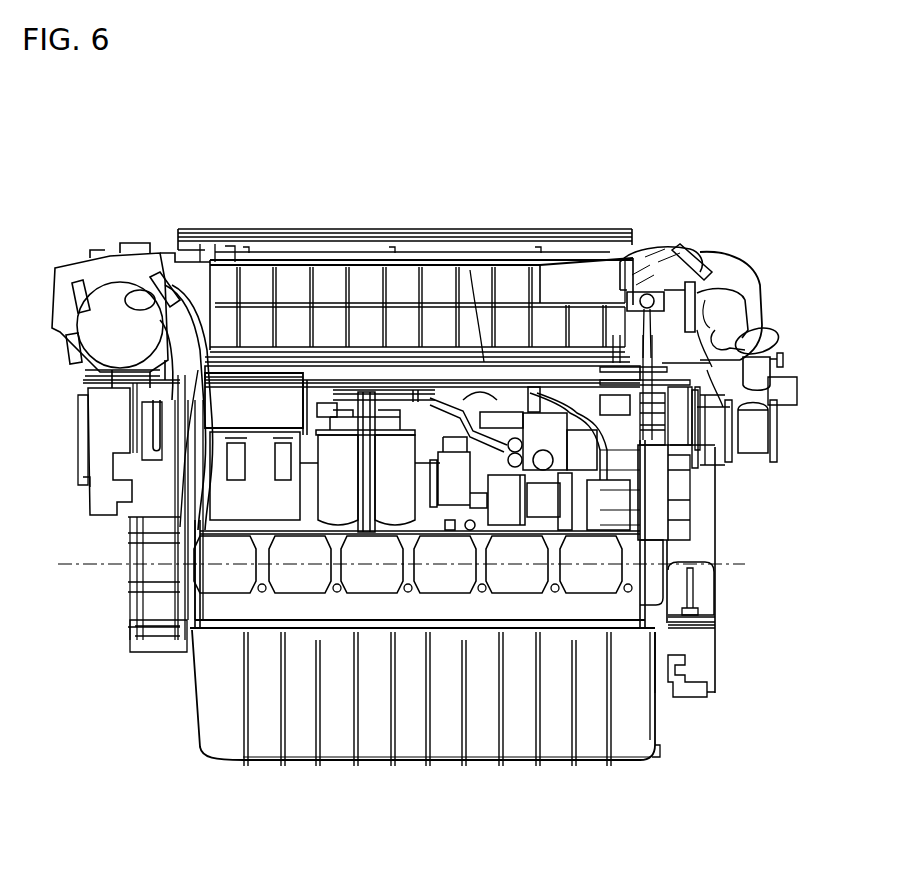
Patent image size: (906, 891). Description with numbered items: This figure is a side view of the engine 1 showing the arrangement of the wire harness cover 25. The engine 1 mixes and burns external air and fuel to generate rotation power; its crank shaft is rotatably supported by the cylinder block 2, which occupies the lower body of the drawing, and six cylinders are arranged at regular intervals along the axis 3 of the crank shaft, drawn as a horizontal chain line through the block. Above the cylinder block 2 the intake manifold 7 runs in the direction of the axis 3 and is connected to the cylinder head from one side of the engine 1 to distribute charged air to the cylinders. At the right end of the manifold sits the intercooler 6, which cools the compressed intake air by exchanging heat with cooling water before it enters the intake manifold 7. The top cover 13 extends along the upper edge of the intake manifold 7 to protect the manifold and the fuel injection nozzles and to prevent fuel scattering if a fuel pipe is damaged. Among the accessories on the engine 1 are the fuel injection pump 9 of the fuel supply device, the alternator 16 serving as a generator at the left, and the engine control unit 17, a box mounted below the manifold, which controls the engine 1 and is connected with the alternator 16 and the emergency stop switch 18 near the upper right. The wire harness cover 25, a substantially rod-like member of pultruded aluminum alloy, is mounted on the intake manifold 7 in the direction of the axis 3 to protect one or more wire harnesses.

The engine 1 is at (66, 133).
The cylinder block 2 is at (624, 612).
The axis of the crank shaft 3 is at (66, 578).
The intercooler 6 is at (733, 268).
The intake manifold 7 is at (441, 272).
The fuel injection pump 9 is at (692, 521).
The top cover 13 is at (303, 230).
The alternator 16 is at (150, 417).
The engine control unit (ECU) 17 is at (270, 414).
The emergency stop switch 18 is at (648, 298).
The wire harness cover 25 is at (484, 362).